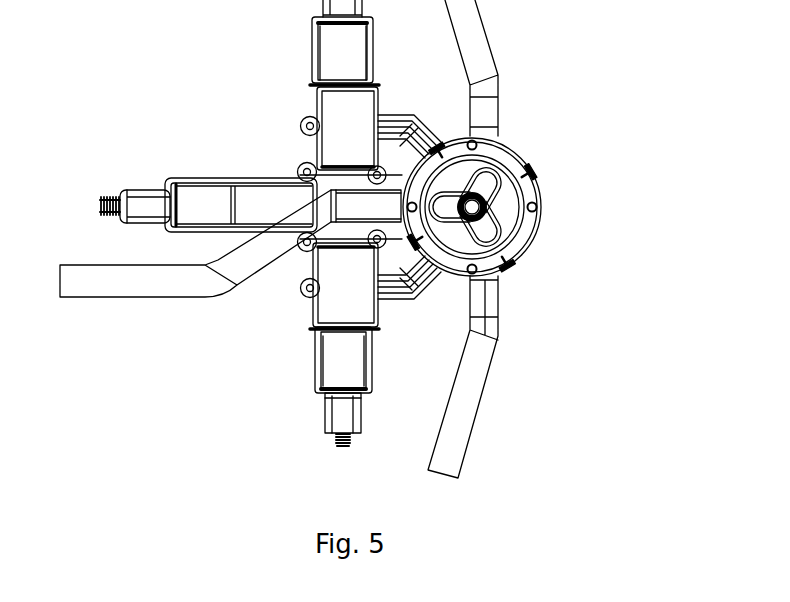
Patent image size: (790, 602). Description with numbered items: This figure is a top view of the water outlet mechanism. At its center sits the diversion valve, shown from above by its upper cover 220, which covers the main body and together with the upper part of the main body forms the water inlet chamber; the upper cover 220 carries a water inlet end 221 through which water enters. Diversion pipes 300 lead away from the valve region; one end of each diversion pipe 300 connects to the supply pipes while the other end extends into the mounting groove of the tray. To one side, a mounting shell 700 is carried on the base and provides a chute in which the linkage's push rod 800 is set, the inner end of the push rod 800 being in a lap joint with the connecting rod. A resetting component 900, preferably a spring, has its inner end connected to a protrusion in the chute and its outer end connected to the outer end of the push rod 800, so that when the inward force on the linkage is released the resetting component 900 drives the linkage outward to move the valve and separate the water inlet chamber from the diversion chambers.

The diversion pipe 300 is at (92, 272).
The mounting shell 700 is at (251, 183).
The push rod 800 is at (158, 193).
The resetting component 900 is at (105, 196).
The upper cover 220 is at (532, 194).
The water inlet end 221 is at (477, 174).